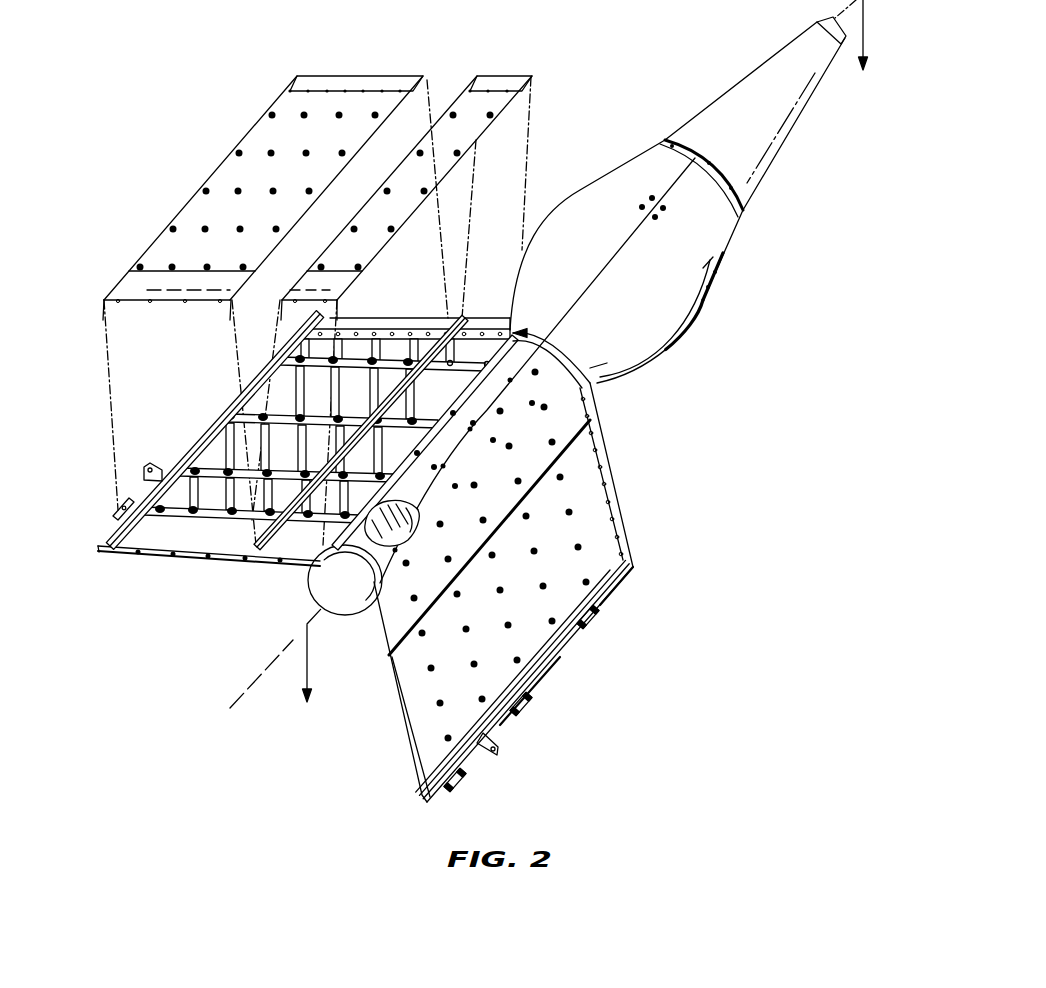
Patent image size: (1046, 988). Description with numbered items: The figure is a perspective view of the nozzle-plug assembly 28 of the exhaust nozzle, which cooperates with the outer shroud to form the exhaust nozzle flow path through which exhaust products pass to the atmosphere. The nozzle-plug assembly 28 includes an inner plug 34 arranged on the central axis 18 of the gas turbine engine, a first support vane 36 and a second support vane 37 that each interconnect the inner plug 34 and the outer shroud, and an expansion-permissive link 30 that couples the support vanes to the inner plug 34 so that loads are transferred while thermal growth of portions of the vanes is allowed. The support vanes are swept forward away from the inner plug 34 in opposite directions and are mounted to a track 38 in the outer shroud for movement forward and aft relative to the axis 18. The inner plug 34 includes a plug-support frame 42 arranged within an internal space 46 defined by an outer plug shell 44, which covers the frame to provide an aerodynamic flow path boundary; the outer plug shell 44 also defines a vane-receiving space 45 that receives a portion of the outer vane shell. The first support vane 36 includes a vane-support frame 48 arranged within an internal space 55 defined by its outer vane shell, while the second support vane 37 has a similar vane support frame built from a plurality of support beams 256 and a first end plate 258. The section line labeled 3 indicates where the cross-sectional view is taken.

The axis 18 is at (247, 692).
The nozzle-plug assembly 28 is at (237, 297).
The expansion-permissive link 30 is at (264, 80).
The inner plug 34 is at (688, 217).
The support vane 36 is at (100, 275).
The second support vane 37 is at (640, 518).
The track 38 is at (127, 498).
The plug-support frame 42 is at (512, 414).
The outer plug shell 44 is at (637, 323).
The vane-receiving space 45 is at (580, 385).
The internal space 46 is at (357, 542).
The vane-support frame 48 is at (208, 454).
The internal space 55 is at (206, 516).
The support beams 256 is at (547, 672).
The first end plate 258 is at (630, 575).
The section line 3- 3 is at (577, 351).